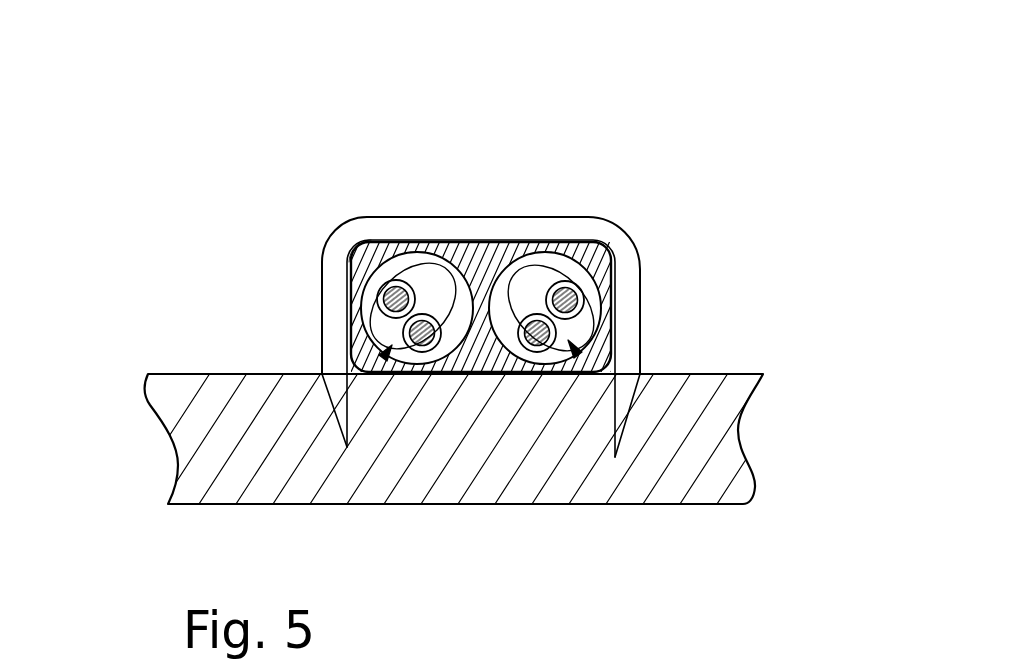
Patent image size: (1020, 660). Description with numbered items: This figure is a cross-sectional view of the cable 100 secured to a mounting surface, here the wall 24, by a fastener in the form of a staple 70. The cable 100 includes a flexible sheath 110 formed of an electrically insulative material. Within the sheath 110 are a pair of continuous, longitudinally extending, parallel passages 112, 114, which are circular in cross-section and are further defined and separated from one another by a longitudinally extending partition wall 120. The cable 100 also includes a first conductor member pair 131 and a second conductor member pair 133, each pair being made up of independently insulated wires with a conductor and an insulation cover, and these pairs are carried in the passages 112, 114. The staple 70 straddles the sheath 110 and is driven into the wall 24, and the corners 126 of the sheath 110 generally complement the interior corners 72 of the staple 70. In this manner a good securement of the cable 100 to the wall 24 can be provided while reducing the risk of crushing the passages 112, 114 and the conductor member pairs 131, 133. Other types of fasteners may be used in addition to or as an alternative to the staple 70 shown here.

The cable 100 is at (548, 142).
The staple 70 is at (437, 223).
The interior corners 72 is at (347, 240).
The sheath 110 is at (347, 273).
The passage 112 is at (363, 320).
The passage 114 is at (603, 307).
The partition wall 120 is at (485, 242).
The corners 126 is at (380, 242).
The first conductor member pair 131 is at (383, 358).
The second conductor member pair 133 is at (578, 355).
The wall 24 is at (675, 488).